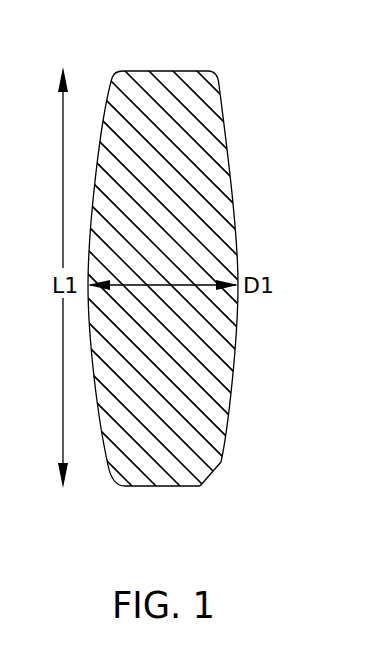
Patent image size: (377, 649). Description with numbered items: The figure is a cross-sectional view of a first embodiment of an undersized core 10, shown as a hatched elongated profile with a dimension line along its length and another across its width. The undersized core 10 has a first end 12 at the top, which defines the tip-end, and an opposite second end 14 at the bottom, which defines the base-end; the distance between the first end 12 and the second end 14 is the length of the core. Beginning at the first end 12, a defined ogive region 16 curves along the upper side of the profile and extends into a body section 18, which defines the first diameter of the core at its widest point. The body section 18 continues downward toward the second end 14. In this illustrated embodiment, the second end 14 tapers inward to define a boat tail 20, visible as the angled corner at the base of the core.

The undersized core 10 is at (232, 74).
The first end 12 is at (115, 72).
The second end 14 is at (210, 470).
The ogive region 16 is at (230, 155).
The body section 18 is at (238, 315).
The boat tail 20 is at (115, 473).